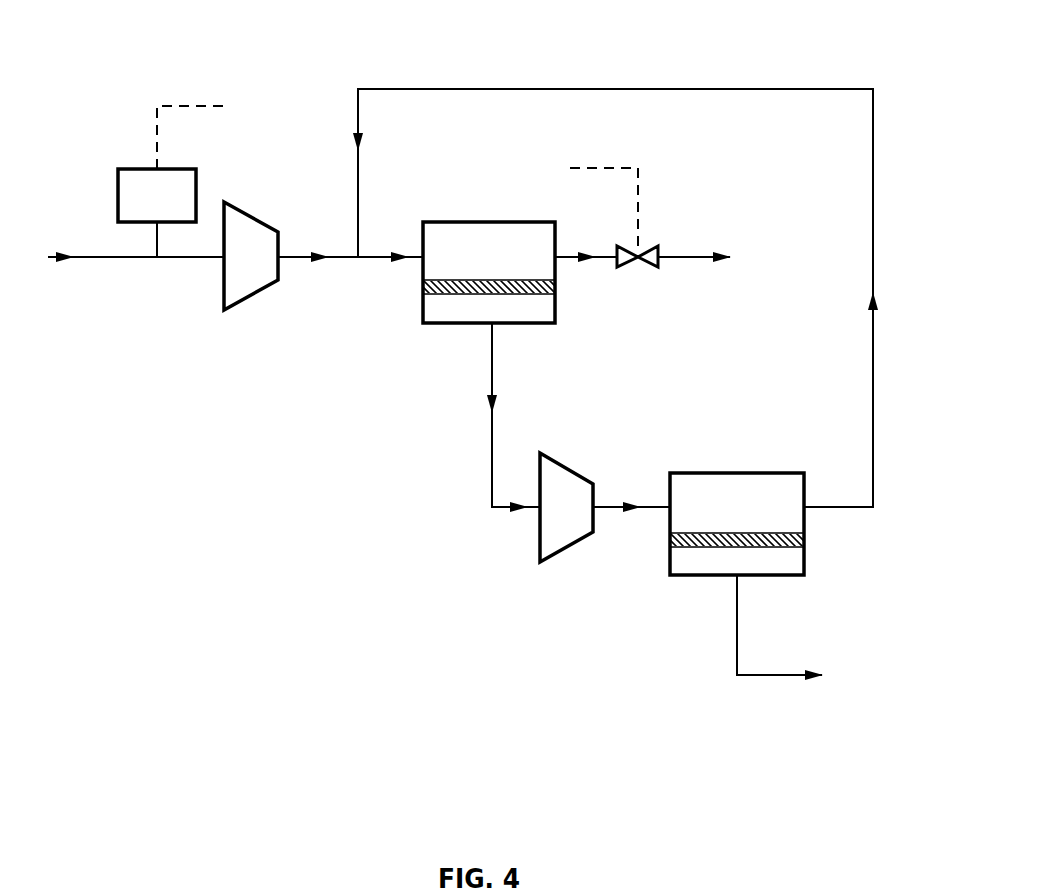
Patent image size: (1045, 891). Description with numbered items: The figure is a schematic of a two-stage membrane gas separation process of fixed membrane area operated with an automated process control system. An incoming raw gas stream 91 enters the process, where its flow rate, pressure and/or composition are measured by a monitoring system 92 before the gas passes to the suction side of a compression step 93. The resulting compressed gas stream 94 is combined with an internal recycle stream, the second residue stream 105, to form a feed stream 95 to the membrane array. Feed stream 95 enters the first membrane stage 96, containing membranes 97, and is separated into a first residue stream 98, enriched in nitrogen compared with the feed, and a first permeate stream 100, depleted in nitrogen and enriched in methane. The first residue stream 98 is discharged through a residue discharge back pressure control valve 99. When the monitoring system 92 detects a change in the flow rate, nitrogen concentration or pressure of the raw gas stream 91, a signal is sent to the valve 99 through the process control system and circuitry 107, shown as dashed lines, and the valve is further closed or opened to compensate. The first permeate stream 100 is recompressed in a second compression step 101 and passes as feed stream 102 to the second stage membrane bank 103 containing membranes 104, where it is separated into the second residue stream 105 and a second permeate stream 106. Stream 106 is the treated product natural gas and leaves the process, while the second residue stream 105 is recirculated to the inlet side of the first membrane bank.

The incoming raw gas stream 91 is at (136, 275).
The monitoring system 92 is at (118, 192).
The compression step 93 is at (240, 302).
The compressed gas stream 94 is at (318, 274).
The feed stream 95 is at (390, 273).
The first membrane stage 96 is at (465, 222).
The membranes 97 is at (555, 287).
The first residue stream 98 is at (586, 241).
The residue discharge back pressure control valve 99 is at (657, 248).
The first permeate stream 100 is at (492, 415).
The compression step 101 is at (558, 556).
The feed stream 102 is at (631, 491).
The second stage membrane bank 103 is at (758, 473).
The membranes 104 is at (804, 540).
The second residue stream 105 is at (640, 298).
The second permeate stream 106 is at (802, 632).
The process control system and circuitry 107 is at (203, 98).